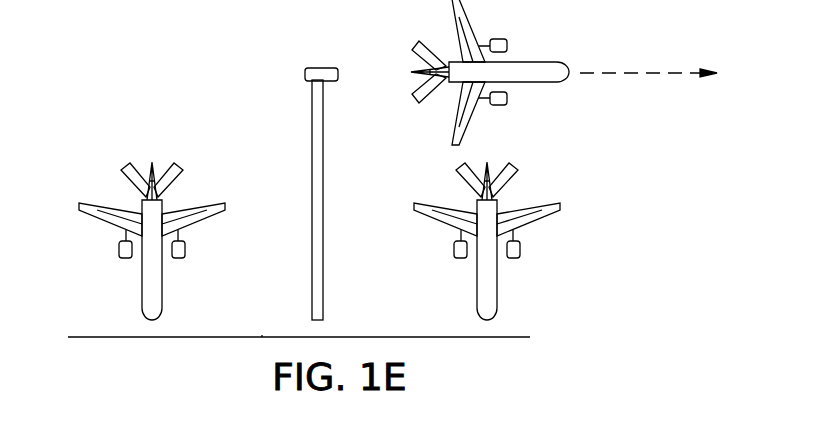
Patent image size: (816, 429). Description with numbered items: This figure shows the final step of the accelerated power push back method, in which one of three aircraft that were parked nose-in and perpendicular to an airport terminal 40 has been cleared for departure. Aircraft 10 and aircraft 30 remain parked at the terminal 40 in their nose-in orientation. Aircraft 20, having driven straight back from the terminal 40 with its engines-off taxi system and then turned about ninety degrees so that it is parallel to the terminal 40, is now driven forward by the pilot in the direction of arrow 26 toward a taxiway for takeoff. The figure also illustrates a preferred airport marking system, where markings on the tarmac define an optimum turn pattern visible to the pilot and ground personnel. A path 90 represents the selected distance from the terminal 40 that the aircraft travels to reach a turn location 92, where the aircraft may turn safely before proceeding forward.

The aircraft 10 is at (128, 283).
The aircraft 20 is at (448, 110).
The arrow 26 is at (636, 75).
The aircraft 30 is at (465, 282).
The airport terminal 40 is at (263, 335).
The path 90 is at (324, 222).
The turn location 92 is at (318, 70).